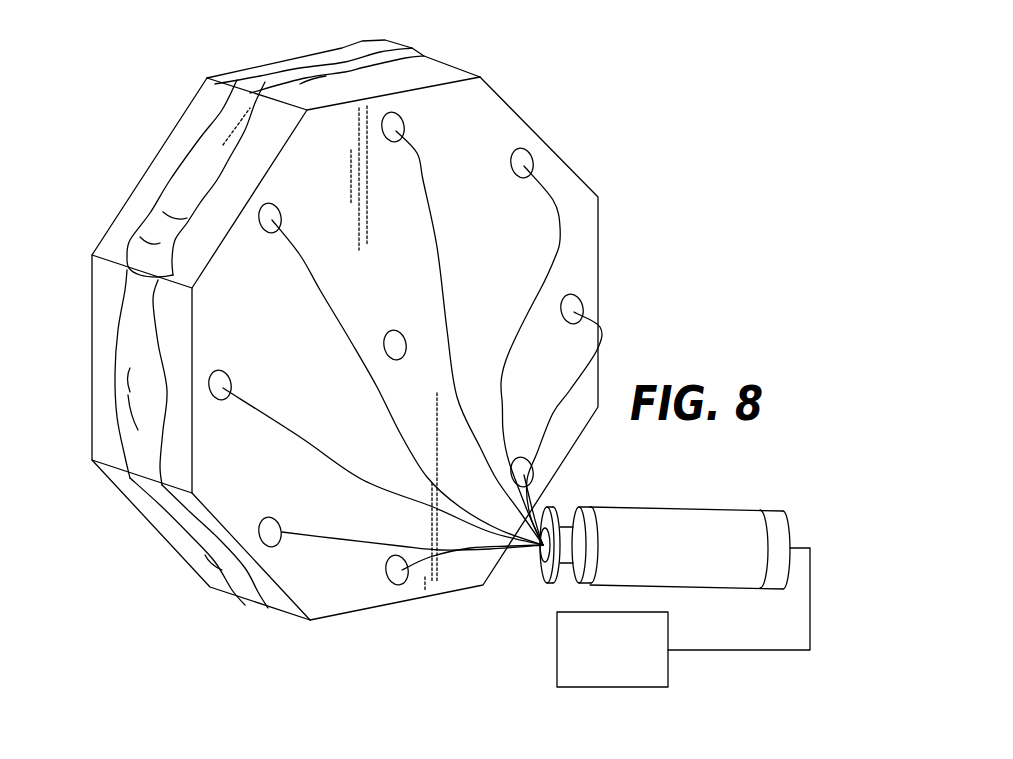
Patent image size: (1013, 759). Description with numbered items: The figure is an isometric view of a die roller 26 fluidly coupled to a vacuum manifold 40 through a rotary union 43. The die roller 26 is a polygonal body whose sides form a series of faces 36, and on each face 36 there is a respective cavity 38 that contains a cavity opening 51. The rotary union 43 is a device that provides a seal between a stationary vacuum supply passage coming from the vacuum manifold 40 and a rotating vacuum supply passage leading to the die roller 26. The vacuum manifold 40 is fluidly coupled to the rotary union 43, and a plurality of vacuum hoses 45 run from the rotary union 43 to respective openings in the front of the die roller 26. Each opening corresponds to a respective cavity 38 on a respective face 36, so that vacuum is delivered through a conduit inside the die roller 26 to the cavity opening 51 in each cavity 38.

The die roller 26 is at (480, 108).
The face 36 is at (363, 52).
The cavity 38 is at (357, 80).
The cavity opening 51 is at (322, 76).
The vacuum hose 45 is at (410, 154).
The rotary union 43 is at (665, 520).
The vacuum manifold 40 is at (627, 663).